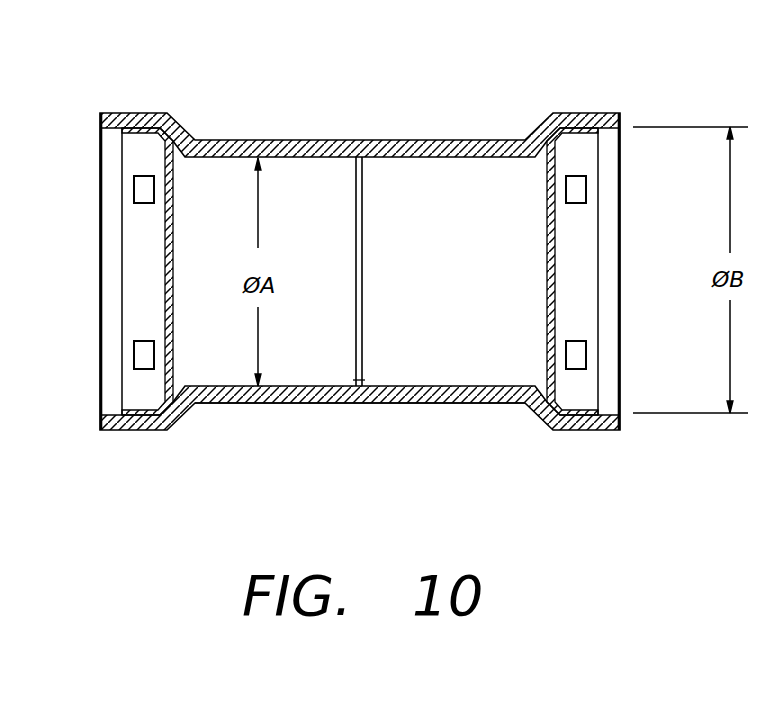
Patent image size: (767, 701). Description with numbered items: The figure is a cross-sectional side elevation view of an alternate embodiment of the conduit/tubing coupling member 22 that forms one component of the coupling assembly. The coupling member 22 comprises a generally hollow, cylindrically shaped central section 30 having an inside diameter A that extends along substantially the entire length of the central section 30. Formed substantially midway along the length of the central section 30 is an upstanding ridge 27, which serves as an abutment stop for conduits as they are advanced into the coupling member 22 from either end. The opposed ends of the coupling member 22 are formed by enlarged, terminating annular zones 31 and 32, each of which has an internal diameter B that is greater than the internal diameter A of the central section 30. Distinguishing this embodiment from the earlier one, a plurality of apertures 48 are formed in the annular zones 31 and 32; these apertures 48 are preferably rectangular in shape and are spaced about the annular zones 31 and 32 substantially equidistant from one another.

The conduit/tubing coupling member 22 is at (305, 403).
The upstanding ridge 27 is at (358, 160).
The central section 30 is at (445, 139).
The terminating annular zone 31 is at (125, 430).
The terminating annular zone 32 is at (593, 430).
The apertures 48 is at (133, 193).